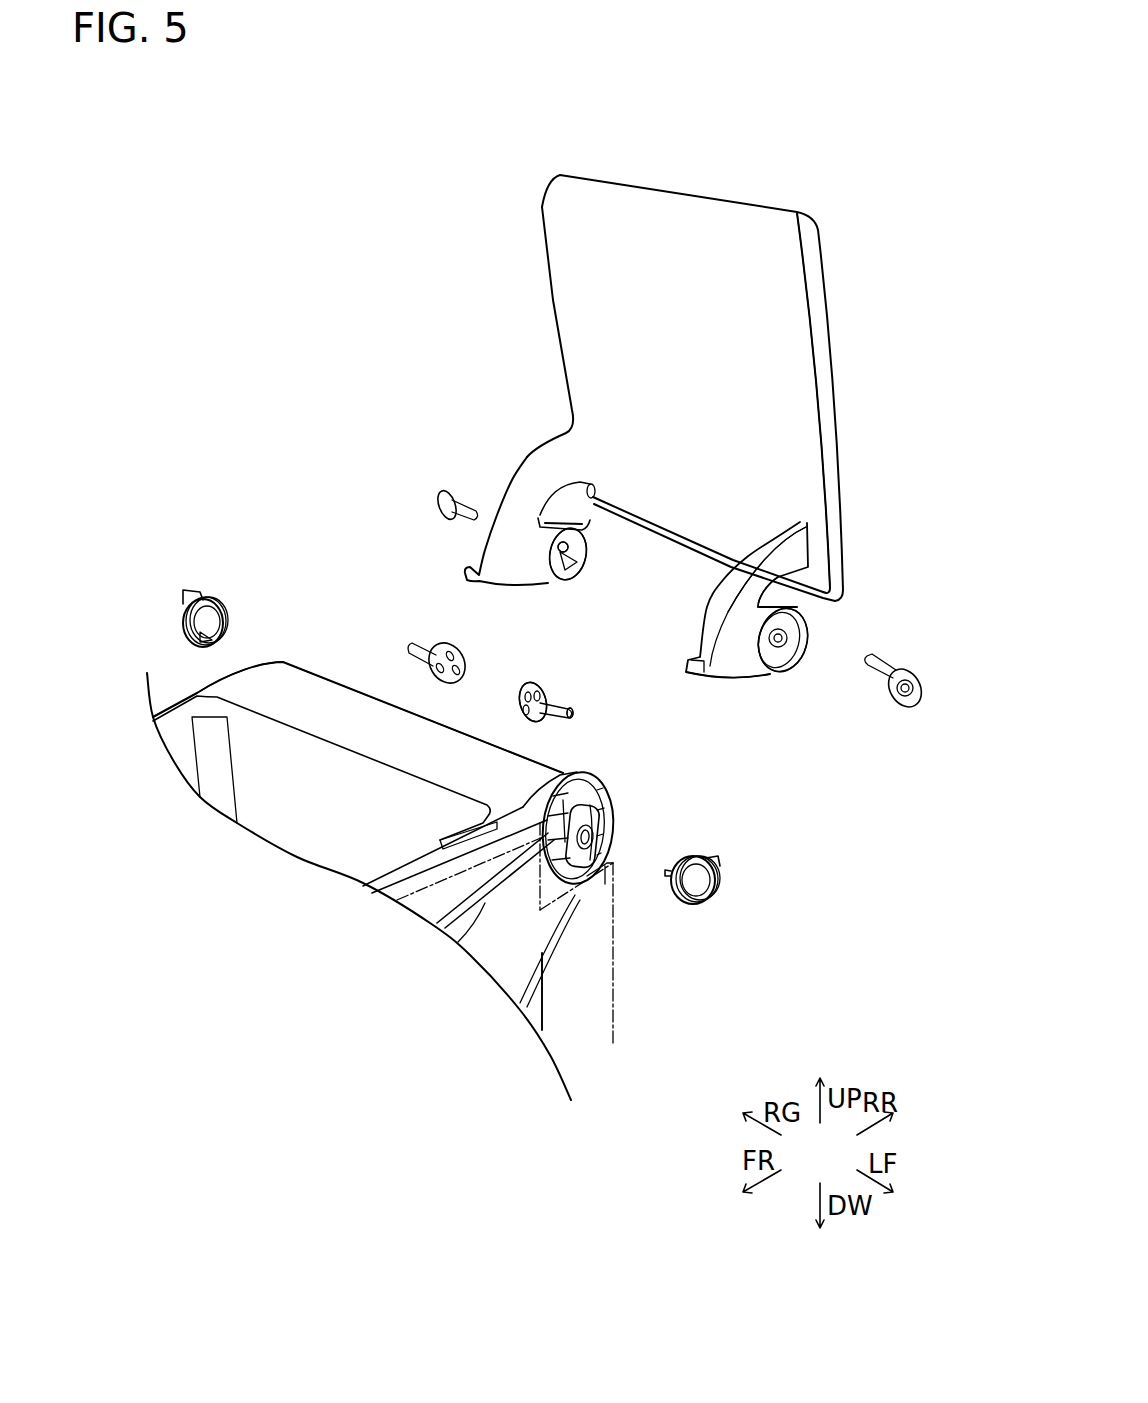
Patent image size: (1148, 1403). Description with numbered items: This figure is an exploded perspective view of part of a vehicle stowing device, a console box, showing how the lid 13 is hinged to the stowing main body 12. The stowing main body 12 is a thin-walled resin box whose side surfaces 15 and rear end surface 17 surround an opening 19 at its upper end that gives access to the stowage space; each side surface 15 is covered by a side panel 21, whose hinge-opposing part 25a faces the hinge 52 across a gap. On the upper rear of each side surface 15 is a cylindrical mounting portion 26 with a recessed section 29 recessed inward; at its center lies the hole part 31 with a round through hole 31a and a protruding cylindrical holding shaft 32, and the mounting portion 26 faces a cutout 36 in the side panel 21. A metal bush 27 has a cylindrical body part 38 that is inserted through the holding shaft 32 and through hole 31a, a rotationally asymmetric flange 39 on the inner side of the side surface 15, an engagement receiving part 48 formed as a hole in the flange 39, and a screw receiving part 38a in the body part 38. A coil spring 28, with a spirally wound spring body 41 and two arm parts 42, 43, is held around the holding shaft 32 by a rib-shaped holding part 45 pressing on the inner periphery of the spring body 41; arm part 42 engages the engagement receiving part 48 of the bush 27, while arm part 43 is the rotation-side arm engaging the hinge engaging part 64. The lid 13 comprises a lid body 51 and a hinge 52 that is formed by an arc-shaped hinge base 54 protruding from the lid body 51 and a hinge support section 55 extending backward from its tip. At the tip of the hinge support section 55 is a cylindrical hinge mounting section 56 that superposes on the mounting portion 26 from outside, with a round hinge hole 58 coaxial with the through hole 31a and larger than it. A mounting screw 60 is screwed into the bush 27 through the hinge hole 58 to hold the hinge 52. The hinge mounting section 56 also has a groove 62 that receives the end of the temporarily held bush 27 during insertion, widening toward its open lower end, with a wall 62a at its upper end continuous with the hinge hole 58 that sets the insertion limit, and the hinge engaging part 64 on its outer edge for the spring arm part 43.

The stowing main body 12 is at (555, 993).
The lid 13 is at (853, 351).
The side surface 15 is at (177, 736).
The rear end surface 17 is at (313, 777).
The opening 19 is at (288, 733).
The side panel 21 is at (614, 1027).
The hinge-opposing part 25a is at (472, 912).
The mounting portion 26 is at (568, 884).
The bush 27 is at (415, 622).
The coil spring 28 is at (475, 738).
The recessed section 29 is at (624, 828).
The hole part 31 is at (639, 832).
The through hole 31a is at (604, 826).
The holding shaft 32 is at (563, 800).
The cutout 36 is at (596, 887).
The body part 38 is at (560, 704).
The screw receiving part 38a is at (575, 713).
The flange 39 is at (541, 686).
The spring body 41 is at (696, 905).
The arm part 42 is at (669, 870).
The arm part 43 is at (720, 861).
The holding part 45 is at (582, 826).
The engagement receiving part 48 is at (552, 687).
The lid body 51 is at (840, 432).
The hinge 52 is at (531, 470).
The hinge base 54 is at (752, 548).
The hinge support section 55 is at (750, 676).
The hinge mounting section 56 is at (788, 606).
The hinge hole 58 is at (561, 556).
The mounting screw 60 is at (458, 466).
The groove 62 is at (570, 565).
The wall 62a is at (576, 549).
The hinge engaging part 64 is at (589, 539).